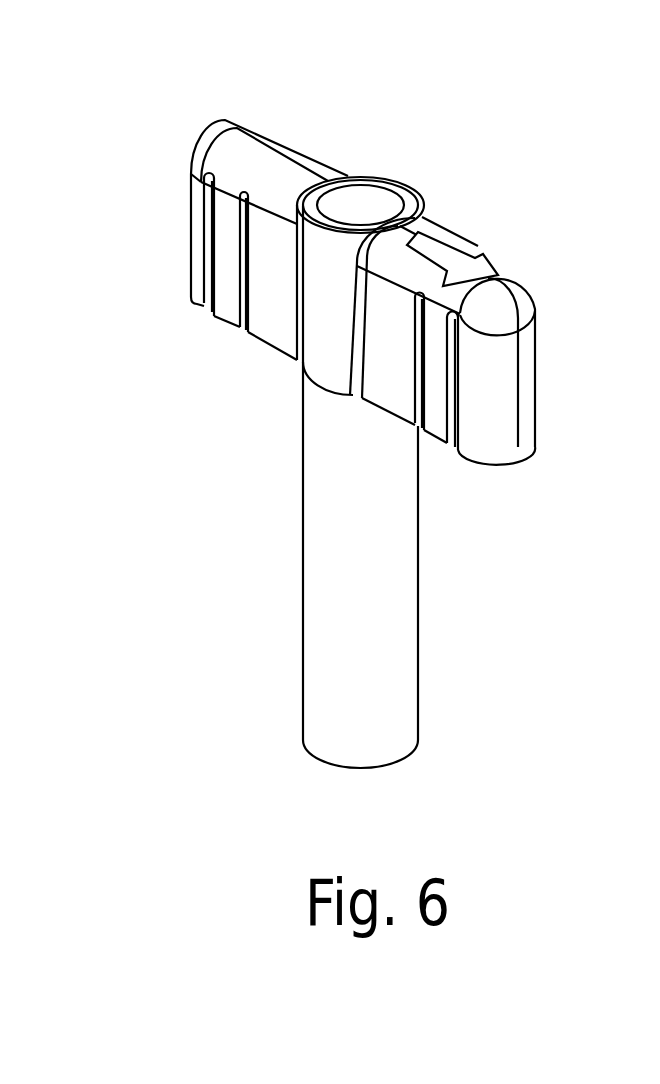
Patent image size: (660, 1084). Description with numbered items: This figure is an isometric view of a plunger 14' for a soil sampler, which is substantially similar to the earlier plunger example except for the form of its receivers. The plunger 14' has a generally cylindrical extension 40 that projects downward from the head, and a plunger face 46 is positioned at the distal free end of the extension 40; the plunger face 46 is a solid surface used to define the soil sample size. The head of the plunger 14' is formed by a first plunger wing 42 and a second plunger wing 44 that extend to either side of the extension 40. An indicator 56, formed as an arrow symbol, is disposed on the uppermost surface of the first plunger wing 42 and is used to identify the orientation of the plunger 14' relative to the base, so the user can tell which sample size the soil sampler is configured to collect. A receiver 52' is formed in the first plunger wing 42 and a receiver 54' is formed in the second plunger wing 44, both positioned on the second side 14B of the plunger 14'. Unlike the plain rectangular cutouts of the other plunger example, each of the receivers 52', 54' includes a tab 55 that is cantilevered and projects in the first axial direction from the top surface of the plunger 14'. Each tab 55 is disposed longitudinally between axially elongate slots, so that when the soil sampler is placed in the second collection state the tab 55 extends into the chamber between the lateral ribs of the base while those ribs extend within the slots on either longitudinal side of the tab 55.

The plunger 14' is at (332, 454).
The second side 14B is at (270, 319).
The extension 40 is at (323, 603).
The first plunger wing 42 is at (518, 295).
The second plunger wing 44 is at (203, 150).
The plunger face 46 is at (380, 770).
The receiver 52' is at (492, 337).
The receiver 54' is at (163, 266).
The tab 55 is at (225, 299).
The indicator 56 is at (462, 253).